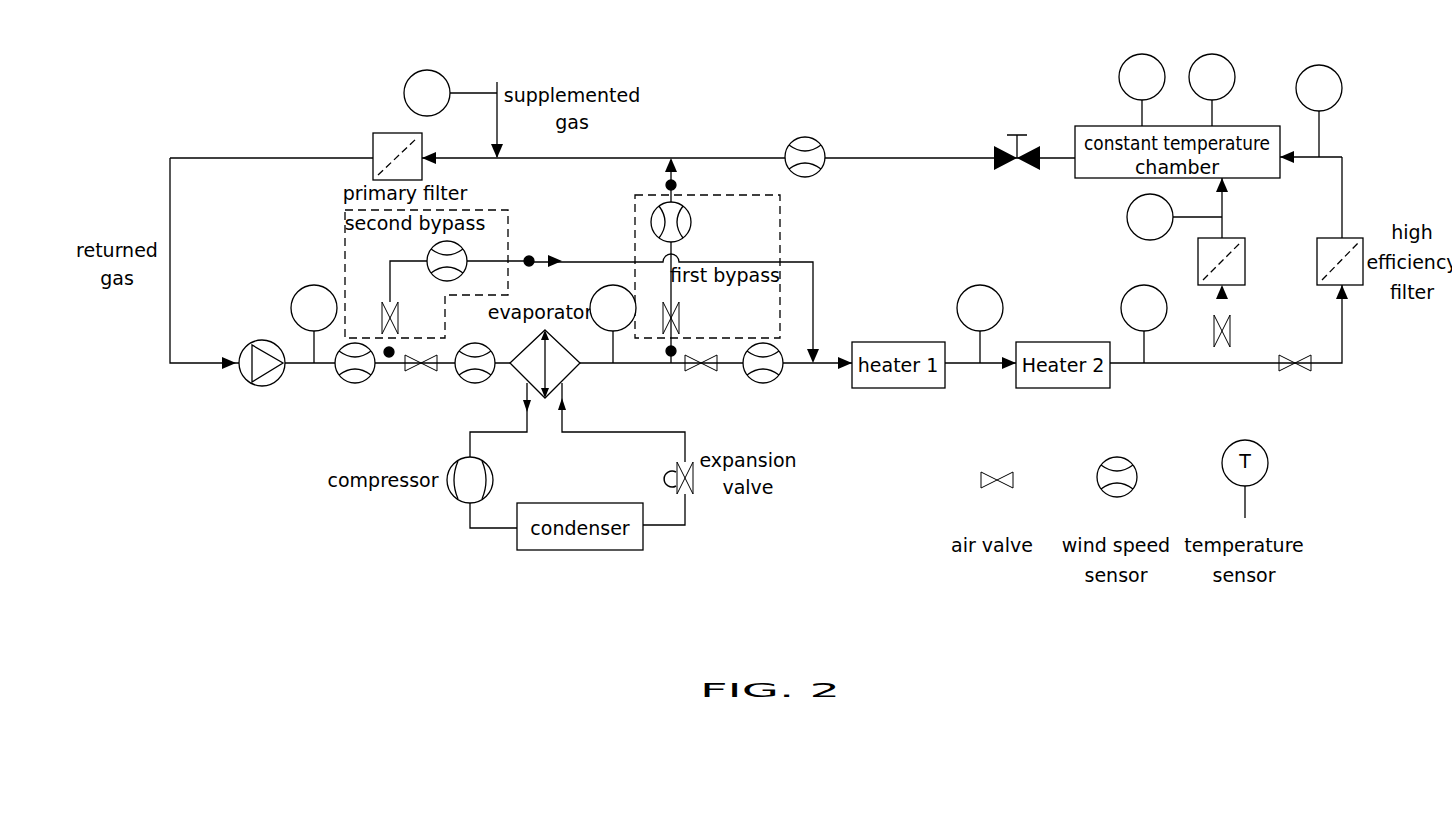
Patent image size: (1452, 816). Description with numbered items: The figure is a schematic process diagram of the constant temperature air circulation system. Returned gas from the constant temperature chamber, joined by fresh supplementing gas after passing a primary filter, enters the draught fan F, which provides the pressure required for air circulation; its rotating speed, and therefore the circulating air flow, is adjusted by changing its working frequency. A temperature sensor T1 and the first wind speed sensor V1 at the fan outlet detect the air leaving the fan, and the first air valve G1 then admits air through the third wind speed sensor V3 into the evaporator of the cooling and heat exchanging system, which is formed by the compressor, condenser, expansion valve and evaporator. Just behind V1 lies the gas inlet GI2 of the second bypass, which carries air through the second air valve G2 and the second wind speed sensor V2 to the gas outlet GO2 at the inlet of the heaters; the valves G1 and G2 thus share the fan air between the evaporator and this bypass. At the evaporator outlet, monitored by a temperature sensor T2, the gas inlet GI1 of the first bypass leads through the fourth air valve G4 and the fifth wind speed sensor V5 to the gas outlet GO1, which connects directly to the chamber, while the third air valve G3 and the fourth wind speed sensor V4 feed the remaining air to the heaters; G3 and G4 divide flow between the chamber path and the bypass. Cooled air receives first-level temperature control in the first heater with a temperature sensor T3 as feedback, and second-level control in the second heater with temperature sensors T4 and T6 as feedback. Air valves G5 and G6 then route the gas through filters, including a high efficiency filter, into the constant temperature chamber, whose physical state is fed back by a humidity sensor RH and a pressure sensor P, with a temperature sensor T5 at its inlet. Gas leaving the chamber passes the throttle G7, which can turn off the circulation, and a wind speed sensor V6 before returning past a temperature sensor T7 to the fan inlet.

The draught fan F is at (248, 379).
The temperature sensor T1 is at (314, 324).
The temperature sensor T2 is at (613, 324).
The temperature sensor T3 is at (980, 324).
The temperature sensor T4 is at (1144, 324).
The temperature sensor T5 is at (1150, 217).
The temperature sensor T6 is at (1319, 111).
The temperature sensor T7 is at (450, 93).
The humidity sensor RH is at (1142, 90).
The pressure sensor P is at (1212, 90).
The first wind speed sensor V1 is at (355, 382).
The second wind speed sensor V2 is at (463, 256).
The third wind speed sensor V3 is at (475, 347).
The fourth wind speed sensor V4 is at (763, 381).
The fifth wind speed sensor V5 is at (688, 222).
The wind speed sensor V6 is at (805, 139).
The first air valve G1 is at (421, 379).
The second air valve G2 is at (407, 318).
The third air valve G3 is at (701, 378).
The fourth air valve G4 is at (688, 318).
The air valve G5 is at (1295, 380).
The air valve G6 is at (1240, 331).
The throttle G7 is at (1017, 152).
The gas outlet of the first bypass GO1 is at (679, 183).
The gas outlet of the second bypass GO2 is at (532, 256).
The gas inlet of the first bypass GI1 is at (668, 356).
The gas inlet of the second bypass GI2 is at (387, 358).